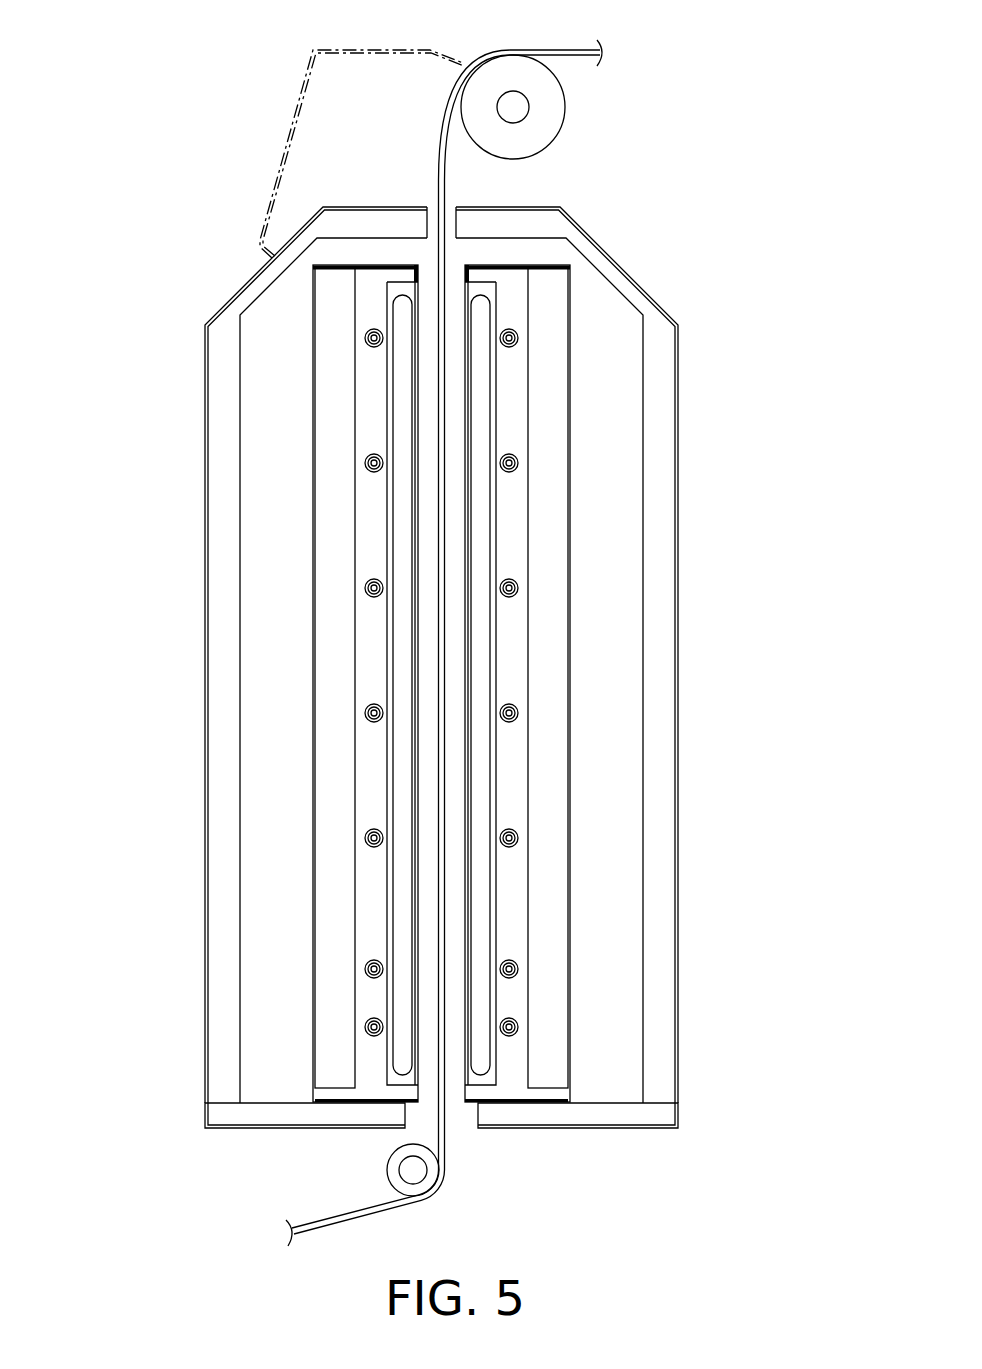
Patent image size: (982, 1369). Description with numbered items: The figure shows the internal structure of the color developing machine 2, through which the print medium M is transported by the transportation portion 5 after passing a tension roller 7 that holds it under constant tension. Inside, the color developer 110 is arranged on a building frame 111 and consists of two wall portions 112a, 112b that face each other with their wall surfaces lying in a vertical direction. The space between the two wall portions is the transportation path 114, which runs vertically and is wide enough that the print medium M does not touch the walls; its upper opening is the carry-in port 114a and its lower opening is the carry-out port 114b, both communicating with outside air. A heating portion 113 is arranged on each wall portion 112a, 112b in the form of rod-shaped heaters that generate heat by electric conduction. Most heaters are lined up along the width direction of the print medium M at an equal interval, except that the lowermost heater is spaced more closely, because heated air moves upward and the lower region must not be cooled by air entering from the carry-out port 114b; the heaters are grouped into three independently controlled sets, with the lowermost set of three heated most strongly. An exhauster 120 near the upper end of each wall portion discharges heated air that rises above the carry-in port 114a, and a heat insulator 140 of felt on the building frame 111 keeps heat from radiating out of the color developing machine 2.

The color developing machine 2 is at (615, 237).
The transportation portion 5 is at (553, 116).
The tension roller 7 is at (548, 132).
The print medium M is at (524, 50).
The color developer 110 is at (634, 284).
The building frame 111 is at (448, 1159).
The wall portion 112a is at (347, 1109).
The wall portion 112b is at (517, 1108).
The heating portion 113 is at (441, 682).
The transportation path 114 is at (455, 578).
The carry-in port 114a is at (434, 211).
The carry-out port 114b is at (455, 1107).
The exhauster 120 is at (280, 152).
The heat insulator 140 is at (323, 495).